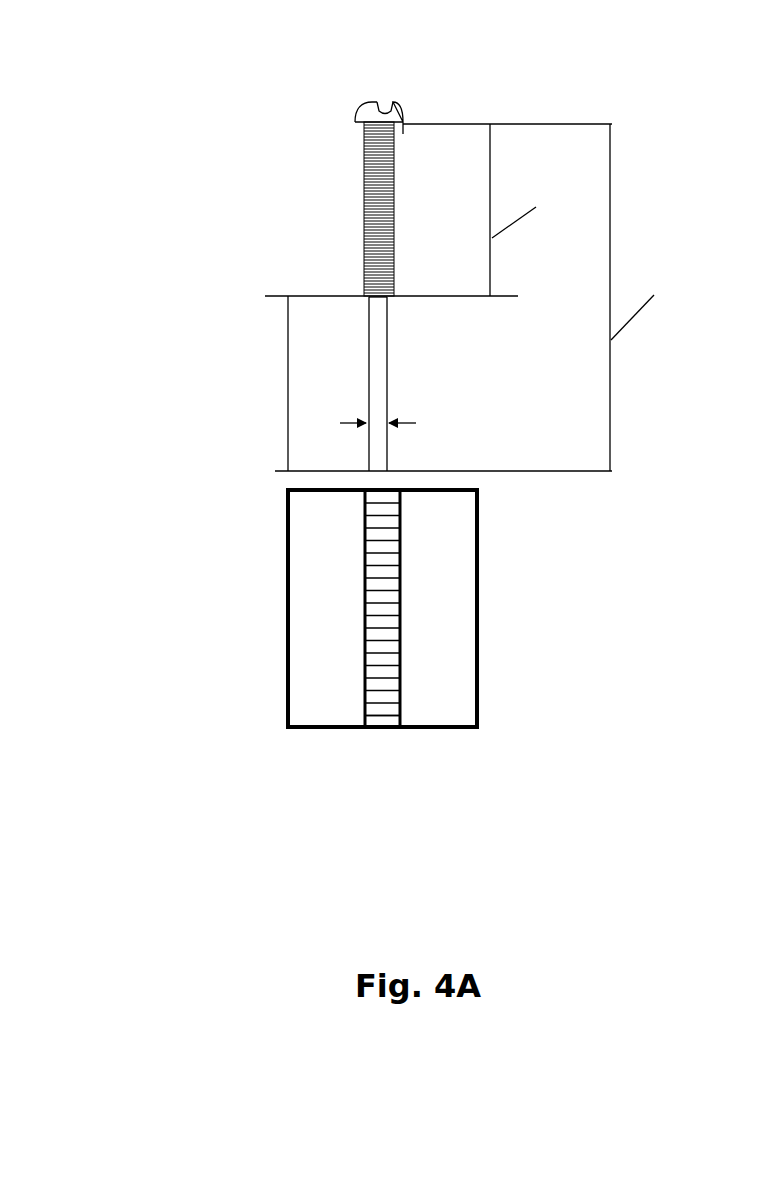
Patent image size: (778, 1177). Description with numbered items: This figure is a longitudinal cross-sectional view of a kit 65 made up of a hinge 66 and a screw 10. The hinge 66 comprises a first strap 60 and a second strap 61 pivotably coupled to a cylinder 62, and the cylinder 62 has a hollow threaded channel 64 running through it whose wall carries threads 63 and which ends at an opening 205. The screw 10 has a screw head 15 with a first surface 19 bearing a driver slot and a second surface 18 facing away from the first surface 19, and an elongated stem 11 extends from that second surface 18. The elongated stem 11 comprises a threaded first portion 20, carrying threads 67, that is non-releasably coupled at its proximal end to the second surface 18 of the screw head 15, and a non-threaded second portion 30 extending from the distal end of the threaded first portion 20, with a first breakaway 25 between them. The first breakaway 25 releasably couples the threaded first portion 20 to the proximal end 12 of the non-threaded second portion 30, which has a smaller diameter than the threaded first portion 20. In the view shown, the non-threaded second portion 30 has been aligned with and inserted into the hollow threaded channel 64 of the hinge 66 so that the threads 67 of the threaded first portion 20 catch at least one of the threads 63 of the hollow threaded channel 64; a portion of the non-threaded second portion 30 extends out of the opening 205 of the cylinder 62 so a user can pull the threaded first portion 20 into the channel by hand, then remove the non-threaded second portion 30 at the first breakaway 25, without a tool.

The kit 65 is at (150, 76).
The screw 10 is at (275, 138).
The screw head 15 is at (349, 102).
The first surface 19 is at (399, 108).
The second surface 18 is at (408, 140).
The threaded first portion 20 is at (366, 140).
The threads 67 is at (376, 265).
The elongated stem 11 is at (258, 235).
The proximal end 12 is at (373, 298).
The first breakaway 25 is at (384, 298).
The non-threaded second portion 30 is at (378, 378).
The hinge 66 is at (262, 563).
The second strap 61 is at (340, 613).
The first strap 60 is at (454, 613).
The threads 63 is at (378, 500).
The hollow threaded channel 64 is at (390, 618).
The opening 205 is at (368, 741).
The cylinder 62 is at (390, 741).